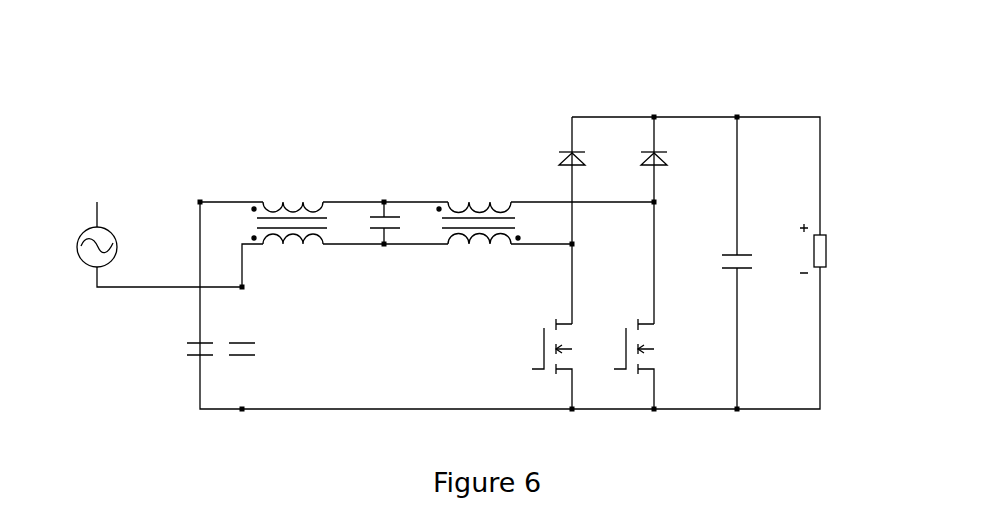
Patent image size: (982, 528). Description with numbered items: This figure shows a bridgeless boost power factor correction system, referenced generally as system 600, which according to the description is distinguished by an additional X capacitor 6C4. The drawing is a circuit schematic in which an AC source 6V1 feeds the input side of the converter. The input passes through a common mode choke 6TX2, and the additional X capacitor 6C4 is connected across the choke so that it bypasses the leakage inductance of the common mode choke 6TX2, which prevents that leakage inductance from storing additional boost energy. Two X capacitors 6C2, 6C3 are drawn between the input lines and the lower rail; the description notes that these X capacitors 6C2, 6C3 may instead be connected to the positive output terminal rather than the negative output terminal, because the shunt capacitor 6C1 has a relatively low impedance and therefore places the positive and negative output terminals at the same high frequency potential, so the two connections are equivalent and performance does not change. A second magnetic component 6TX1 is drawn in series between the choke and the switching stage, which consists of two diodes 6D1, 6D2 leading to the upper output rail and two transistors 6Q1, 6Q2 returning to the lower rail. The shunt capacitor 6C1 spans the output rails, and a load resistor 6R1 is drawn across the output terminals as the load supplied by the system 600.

The bridgeless boost PFC system 600 is at (334, 104).
The AC source 6V1 is at (75, 265).
The X capacitor 6C2 is at (180, 346).
The X capacitor 6C3 is at (263, 346).
The common mode choke 6TX2 is at (289, 208).
The additional X capacitor 6C4 is at (381, 209).
The transformer 6TX1 is at (478, 208).
The diode 6D1 is at (593, 154).
The diode 6D2 is at (677, 155).
The transistor 6Q1 is at (550, 364).
The transistor 6Q2 is at (633, 364).
The shunt capacitor 6C1 is at (755, 259).
The load resistor 6R1 is at (842, 248).